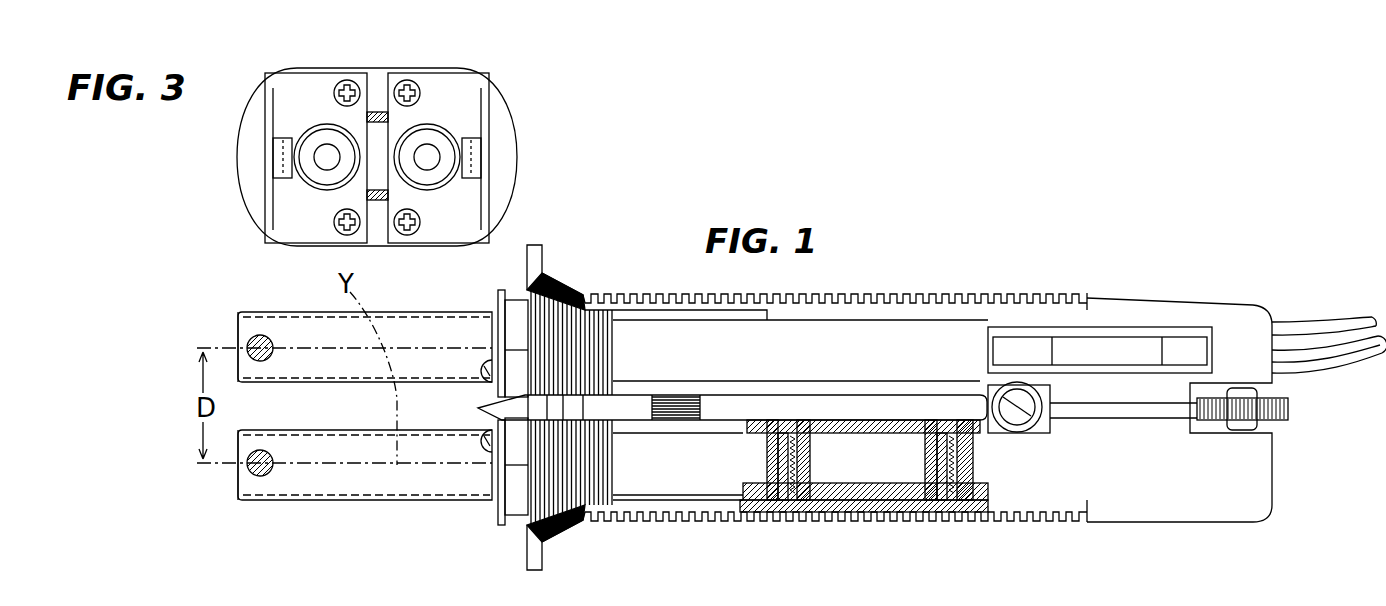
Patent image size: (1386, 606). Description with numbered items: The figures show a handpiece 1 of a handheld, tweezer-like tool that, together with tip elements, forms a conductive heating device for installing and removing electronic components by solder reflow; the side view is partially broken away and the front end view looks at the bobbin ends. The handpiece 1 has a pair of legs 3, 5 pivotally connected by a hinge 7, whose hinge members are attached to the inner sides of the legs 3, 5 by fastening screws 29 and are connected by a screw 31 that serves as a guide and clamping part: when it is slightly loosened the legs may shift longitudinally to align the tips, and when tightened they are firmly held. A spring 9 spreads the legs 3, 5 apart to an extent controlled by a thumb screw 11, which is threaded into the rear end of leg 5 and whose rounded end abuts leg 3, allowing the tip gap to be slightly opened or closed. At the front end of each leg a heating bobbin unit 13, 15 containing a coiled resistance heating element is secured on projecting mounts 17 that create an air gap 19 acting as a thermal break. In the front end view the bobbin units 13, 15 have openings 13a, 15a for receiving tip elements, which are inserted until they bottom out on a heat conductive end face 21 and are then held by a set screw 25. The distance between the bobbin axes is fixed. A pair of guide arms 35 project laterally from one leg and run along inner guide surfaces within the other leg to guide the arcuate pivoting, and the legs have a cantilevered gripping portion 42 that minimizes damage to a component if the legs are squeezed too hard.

In FIG. 1, the handpiece 1 is at (1098, 268).
In FIG. 1, the leg 3 is at (875, 370).
In FIG. 1, the leg 5 is at (1135, 490).
In FIG. 1, the hinge 7 is at (985, 392).
In FIG. 1, the spring 9 is at (695, 410).
In FIG. 1, the thumb screw 11 is at (1290, 402).
In FIG. 3, the heating bobbin unit 13 is at (322, 178).
In FIG. 1, the heating bobbin unit 13 is at (425, 325).
In FIG. 3, the opening 13a is at (322, 165).
In FIG. 3, the heating bobbin unit 15 is at (445, 165).
In FIG. 1, the heating bobbin unit 15 is at (388, 483).
In FIG. 3, the opening 15a is at (438, 155).
In FIG. 1, the projecting mount 17 is at (478, 408).
In FIG. 1, the air gap 19 is at (515, 322).
In FIG. 1, the heat conductive end face 21 is at (238, 330).
In FIG. 1, the set screw 25 is at (270, 362).
In FIG. 1, the fastening screw 29 is at (792, 505).
In FIG. 1, the screw 31 is at (1014, 425).
In FIG. 3, the guide arm 35 is at (382, 112).
In FIG. 1, the guide arm 35 is at (575, 405).
In FIG. 1, the cantilevered gripping portion 42 is at (563, 293).